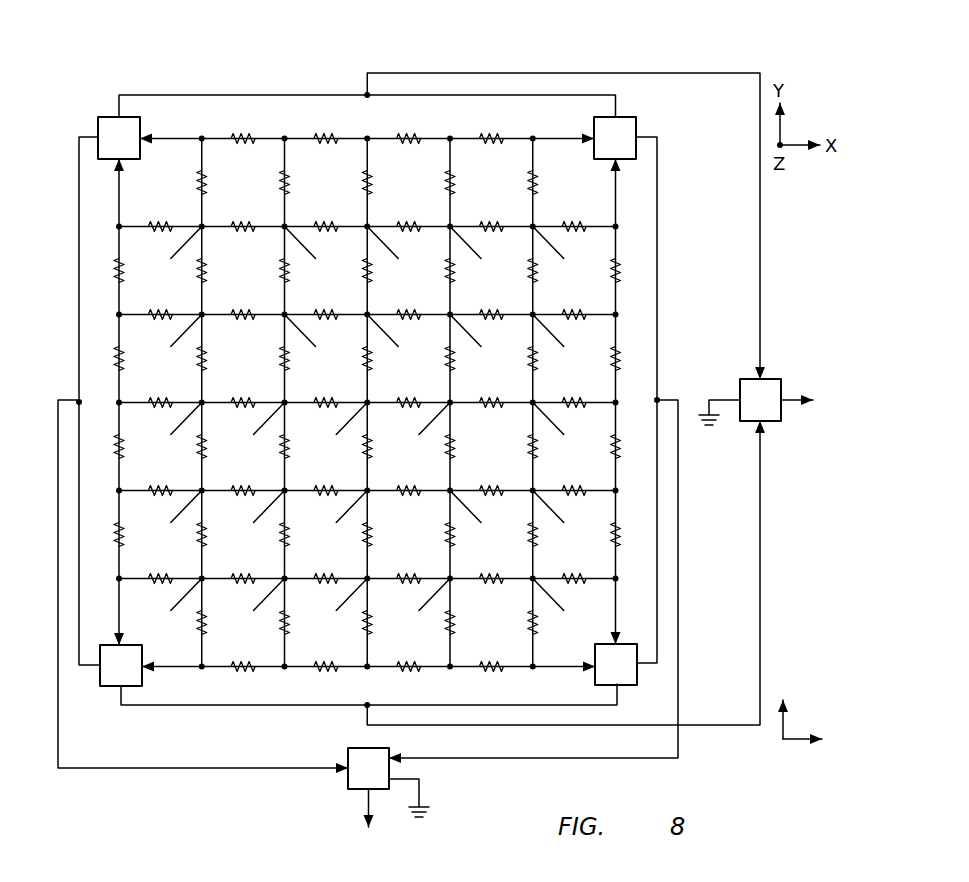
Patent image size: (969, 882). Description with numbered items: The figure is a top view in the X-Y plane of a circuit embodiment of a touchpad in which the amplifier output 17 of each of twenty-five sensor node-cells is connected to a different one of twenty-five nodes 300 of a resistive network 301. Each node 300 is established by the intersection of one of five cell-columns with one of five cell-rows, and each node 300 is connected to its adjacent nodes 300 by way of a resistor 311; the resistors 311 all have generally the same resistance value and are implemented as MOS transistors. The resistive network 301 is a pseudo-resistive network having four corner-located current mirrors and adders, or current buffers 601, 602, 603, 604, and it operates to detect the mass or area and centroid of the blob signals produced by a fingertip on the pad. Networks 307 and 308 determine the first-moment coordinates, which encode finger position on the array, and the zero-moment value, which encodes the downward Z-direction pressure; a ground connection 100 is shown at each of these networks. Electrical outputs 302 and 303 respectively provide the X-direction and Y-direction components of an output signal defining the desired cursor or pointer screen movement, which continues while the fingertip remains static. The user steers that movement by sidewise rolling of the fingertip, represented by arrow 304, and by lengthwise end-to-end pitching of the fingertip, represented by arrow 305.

The amplifier output 17 is at (185, 243).
The ground 100 is at (726, 398).
The node 300 is at (195, 220).
The resistive network 301 is at (688, 235).
The electrical output 302 is at (366, 804).
The electrical output 303 is at (792, 404).
The arrow 304 is at (785, 724).
The arrow 305 is at (797, 742).
The network 307 is at (347, 749).
The network 308 is at (755, 422).
The resistor 311 is at (247, 146).
The current buffer 601 is at (97, 130).
The current buffer 602 is at (638, 122).
The current buffer 603 is at (130, 643).
The current buffer 604 is at (601, 642).